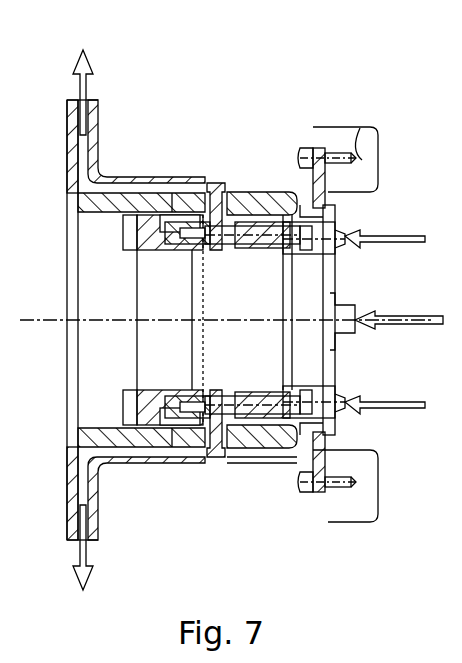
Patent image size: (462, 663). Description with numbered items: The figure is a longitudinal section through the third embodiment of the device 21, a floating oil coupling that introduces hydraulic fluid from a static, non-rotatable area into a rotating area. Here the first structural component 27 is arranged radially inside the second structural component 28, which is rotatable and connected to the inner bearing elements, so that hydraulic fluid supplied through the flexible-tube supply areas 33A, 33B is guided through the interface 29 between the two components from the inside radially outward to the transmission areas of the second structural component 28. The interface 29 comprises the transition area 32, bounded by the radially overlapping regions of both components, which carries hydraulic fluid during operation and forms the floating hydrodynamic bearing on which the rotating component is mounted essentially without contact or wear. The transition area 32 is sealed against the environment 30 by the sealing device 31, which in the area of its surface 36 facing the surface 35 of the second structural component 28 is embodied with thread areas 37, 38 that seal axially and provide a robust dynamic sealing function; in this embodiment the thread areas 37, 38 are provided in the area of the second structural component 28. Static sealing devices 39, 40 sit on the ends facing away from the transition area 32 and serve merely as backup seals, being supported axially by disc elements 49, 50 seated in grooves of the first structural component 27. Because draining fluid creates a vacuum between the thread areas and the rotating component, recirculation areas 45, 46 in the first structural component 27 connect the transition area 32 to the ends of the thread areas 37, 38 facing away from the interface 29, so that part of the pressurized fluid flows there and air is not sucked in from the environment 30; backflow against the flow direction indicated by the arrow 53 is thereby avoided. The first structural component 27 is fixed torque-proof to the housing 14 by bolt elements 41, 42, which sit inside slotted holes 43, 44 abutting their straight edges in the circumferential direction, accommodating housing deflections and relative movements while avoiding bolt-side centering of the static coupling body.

The environment 30 is at (143, 74).
The second structural component 28 is at (146, 178).
The thread area 37 is at (173, 195).
The transition area 32 is at (216, 192).
The sealing device 31 is at (260, 192).
The first structural component 27 is at (166, 255).
The disc element 49 is at (120, 223).
The static sealing device 39 is at (122, 420).
The surface 35 is at (230, 240).
The interface 29 is at (222, 250).
The recirculation area 45 is at (172, 396).
The recirculation area 46 is at (262, 396).
The arrow 53 is at (178, 448).
The surface 36 is at (218, 455).
The static sealing device 40 is at (262, 452).
The thread area 38 is at (245, 465).
The disc element 50 is at (338, 200).
The supply area 33A is at (345, 228).
The supply area 33B is at (345, 418).
The bolt element 41 is at (312, 152).
The slotted hole 43 is at (322, 148).
The housing 14 is at (370, 128).
The bolt element 42 is at (312, 488).
The slotted hole 44 is at (322, 492).
The device 21 is at (276, 100).